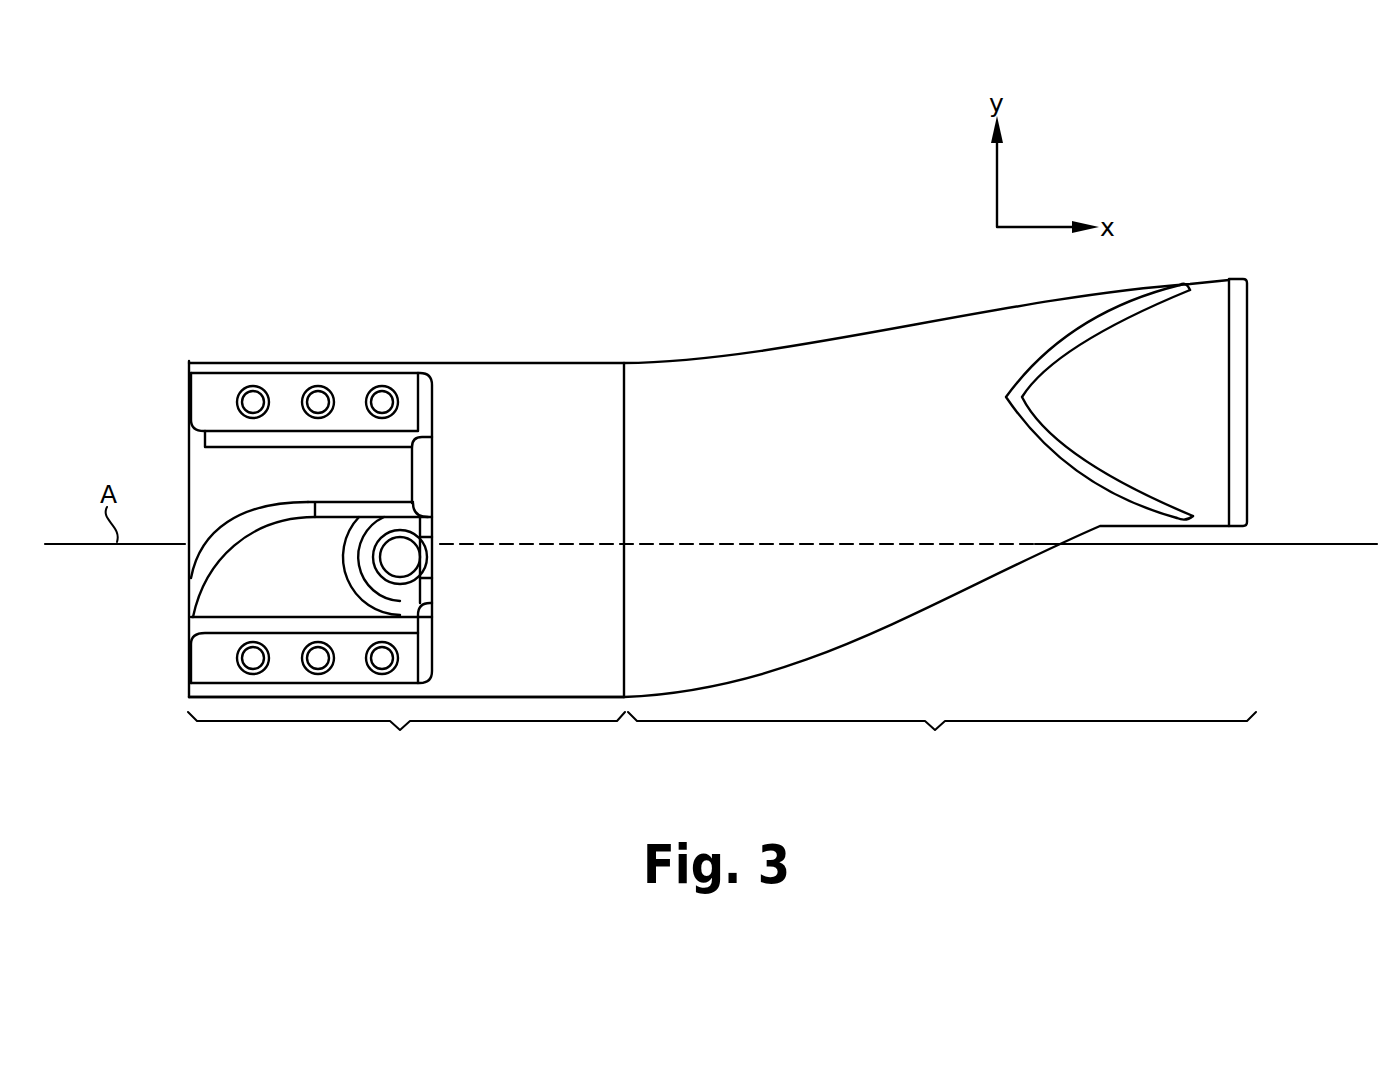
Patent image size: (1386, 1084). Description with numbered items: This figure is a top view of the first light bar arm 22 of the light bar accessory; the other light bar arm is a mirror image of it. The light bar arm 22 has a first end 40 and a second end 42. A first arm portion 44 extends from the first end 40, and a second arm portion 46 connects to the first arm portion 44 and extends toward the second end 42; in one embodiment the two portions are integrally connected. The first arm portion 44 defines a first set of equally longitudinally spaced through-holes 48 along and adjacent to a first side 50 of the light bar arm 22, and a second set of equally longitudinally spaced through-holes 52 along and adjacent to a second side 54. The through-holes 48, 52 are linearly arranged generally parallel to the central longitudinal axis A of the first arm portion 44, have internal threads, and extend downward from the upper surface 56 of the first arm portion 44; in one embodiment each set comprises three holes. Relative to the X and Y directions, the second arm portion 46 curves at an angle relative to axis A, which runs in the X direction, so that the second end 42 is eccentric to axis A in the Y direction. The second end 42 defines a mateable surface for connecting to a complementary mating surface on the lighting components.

The first light bar arm 22 is at (727, 352).
The first end 40 is at (366, 504).
The second end 42 is at (1248, 414).
The first arm portion 44 is at (406, 738).
The second arm portion 46 is at (942, 738).
The first set of equally longitudinally spaced through-holes 48 is at (370, 387).
The first side 50 is at (435, 373).
The second set of equally longitudinally spaced through-holes 52 is at (370, 647).
The second side 54 is at (190, 702).
The upper surface 56 is at (207, 395).